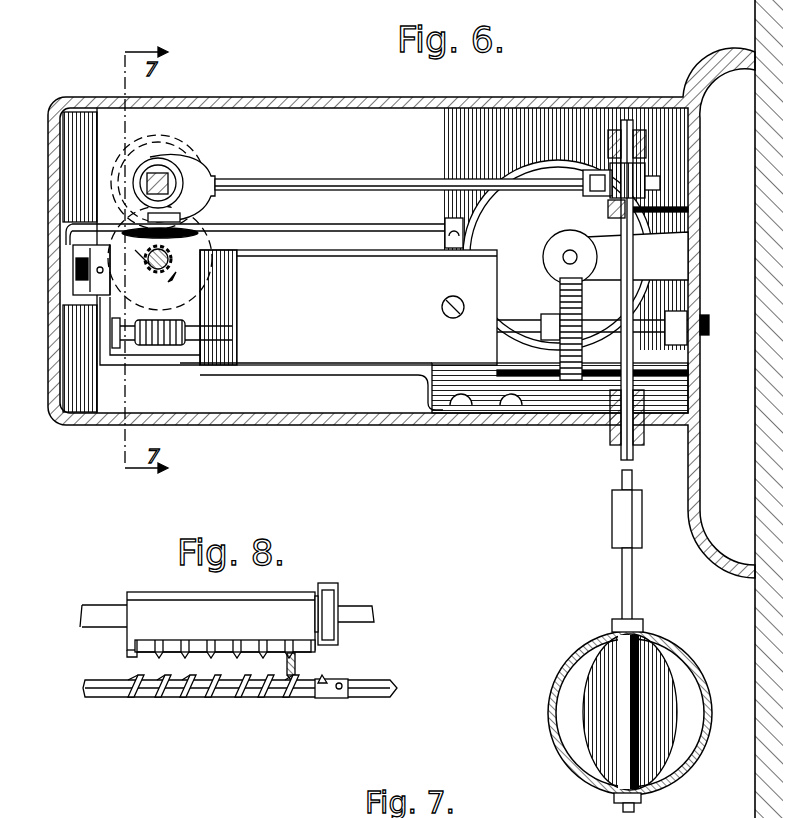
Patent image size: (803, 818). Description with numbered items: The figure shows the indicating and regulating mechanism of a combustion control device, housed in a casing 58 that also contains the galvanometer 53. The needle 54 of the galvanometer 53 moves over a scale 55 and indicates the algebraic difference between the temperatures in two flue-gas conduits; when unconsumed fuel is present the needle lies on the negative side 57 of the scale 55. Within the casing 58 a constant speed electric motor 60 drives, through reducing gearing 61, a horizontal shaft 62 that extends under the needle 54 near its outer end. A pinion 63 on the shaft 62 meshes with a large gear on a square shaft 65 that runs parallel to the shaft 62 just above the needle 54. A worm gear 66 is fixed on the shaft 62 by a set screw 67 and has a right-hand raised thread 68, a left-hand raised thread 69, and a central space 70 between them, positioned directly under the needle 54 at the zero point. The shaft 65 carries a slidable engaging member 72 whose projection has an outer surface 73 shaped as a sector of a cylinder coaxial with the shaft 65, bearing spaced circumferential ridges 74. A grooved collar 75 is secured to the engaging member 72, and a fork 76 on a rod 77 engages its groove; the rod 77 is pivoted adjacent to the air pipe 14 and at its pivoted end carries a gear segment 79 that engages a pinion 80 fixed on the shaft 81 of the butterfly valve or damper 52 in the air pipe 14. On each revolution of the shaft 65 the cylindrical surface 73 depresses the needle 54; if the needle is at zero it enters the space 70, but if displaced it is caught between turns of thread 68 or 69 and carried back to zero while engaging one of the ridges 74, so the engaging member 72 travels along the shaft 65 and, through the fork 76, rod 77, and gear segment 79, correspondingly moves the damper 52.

In FIG. 6, the air pipe 14 is at (707, 683).
In FIG. 6, the damper 52 is at (667, 727).
In FIG. 6, the galvanometer 53 is at (348, 307).
In FIG. 6, the needle 54 is at (320, 224).
In FIG. 8, the needle 54 is at (296, 666).
In FIG. 6, the scale 55 is at (87, 281).
In FIG. 6, the negative side 57 is at (95, 286).
In FIG. 6, the casing 58 is at (319, 425).
In FIG. 6, the constant speed electric motor 60 is at (558, 255).
In FIG. 6, the reducing gearing 61 is at (562, 296).
In FIG. 6, the shaft 62 is at (172, 261).
In FIG. 8, the shaft 62 is at (390, 694).
In FIG. 6, the pinion 63 is at (154, 282).
In FIG. 6, the shaft 65 is at (150, 183).
In FIG. 8, the shaft 65 is at (371, 608).
In FIG. 8, the worm gear 66 is at (143, 698).
In FIG. 8, the set screw 67 is at (338, 691).
In FIG. 6, the right-hand raised thread 68 is at (146, 262).
In FIG. 8, the right-hand raised thread 68 is at (307, 699).
In FIG. 8, the left-hand raised thread 69 is at (182, 699).
In FIG. 8, the central space 70 is at (235, 699).
In FIG. 8, the engaging member 72 is at (148, 603).
In FIG. 6, the cylindrical surface 73 is at (176, 165).
In FIG. 8, the cylindrical surface 73 is at (138, 653).
In FIG. 8, the circumferential ridges 74 is at (233, 634).
In FIG. 6, the grooved collar 75 is at (183, 177).
In FIG. 8, the grooved collar 75 is at (338, 598).
In FIG. 6, the fork 76 is at (185, 204).
In FIG. 8, the fork 76 is at (329, 586).
In FIG. 6, the rod 77 is at (375, 178).
In FIG. 6, the gear segment 79 is at (661, 183).
In FIG. 6, the pinion 80 is at (648, 170).
In FIG. 6, the shaft 81 is at (634, 262).